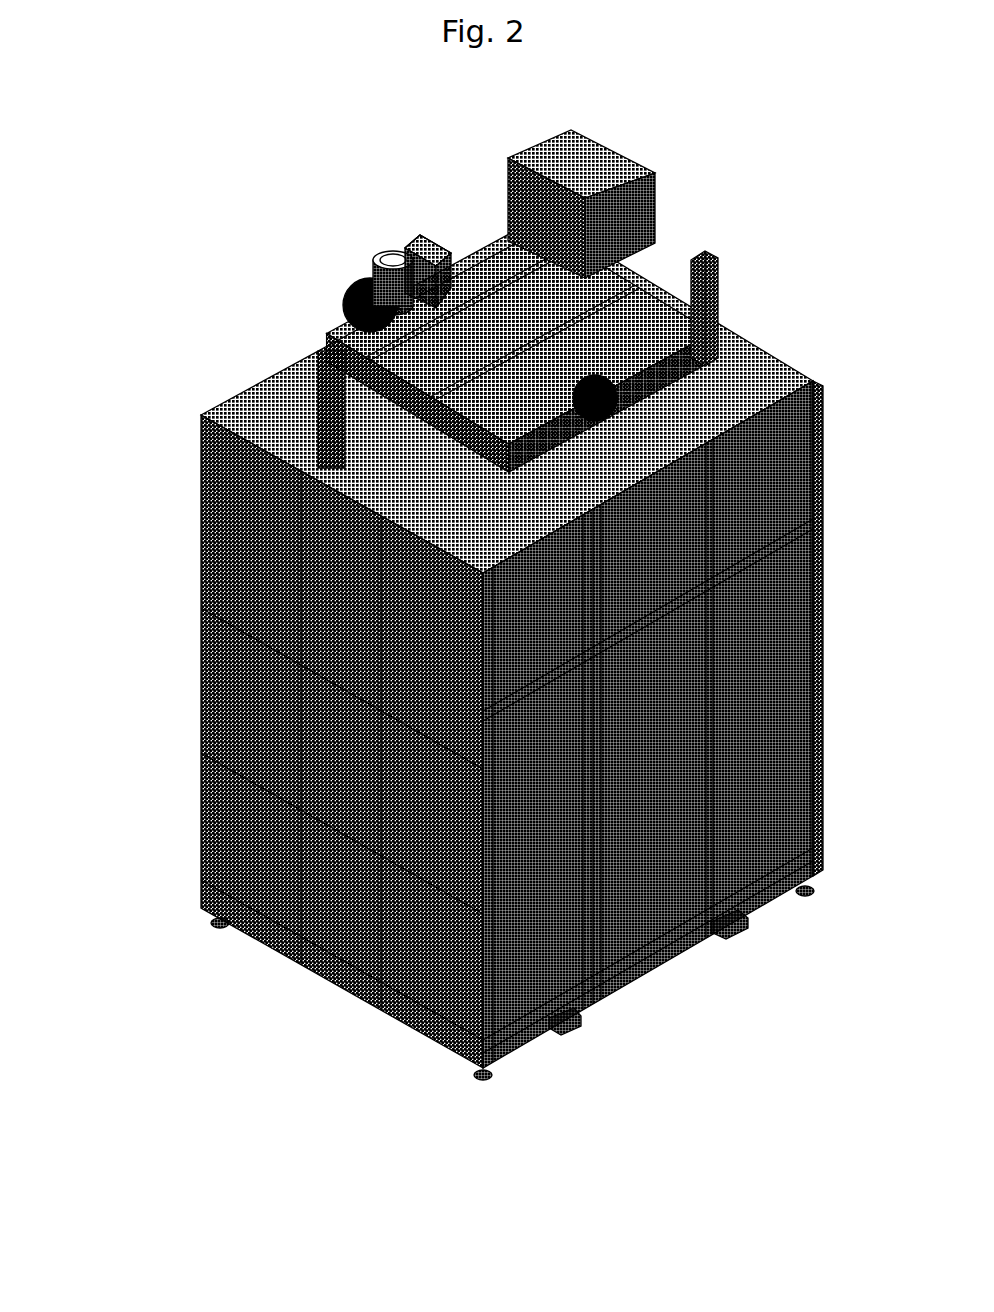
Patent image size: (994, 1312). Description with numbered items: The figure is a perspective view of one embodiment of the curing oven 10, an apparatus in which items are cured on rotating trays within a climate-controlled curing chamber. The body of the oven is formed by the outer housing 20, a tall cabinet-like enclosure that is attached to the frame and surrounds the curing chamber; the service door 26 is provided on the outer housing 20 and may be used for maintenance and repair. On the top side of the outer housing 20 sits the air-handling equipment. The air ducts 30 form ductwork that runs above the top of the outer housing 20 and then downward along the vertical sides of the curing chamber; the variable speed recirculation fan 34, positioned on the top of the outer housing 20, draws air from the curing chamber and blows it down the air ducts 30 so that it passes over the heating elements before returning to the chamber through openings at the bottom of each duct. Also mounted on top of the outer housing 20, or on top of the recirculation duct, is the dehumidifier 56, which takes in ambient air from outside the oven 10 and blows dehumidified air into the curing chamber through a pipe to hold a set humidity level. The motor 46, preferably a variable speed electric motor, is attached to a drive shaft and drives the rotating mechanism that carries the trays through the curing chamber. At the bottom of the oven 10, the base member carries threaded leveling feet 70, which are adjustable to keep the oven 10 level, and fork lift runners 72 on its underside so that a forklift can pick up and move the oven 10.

The curing oven 10 is at (147, 605).
The outer housing 20 is at (805, 372).
The service door 26 is at (662, 735).
The air ducts 30 is at (476, 330).
The variable speed recirculation fan 34 is at (337, 292).
The motor 46 is at (710, 307).
The dehumidifier 56 is at (585, 148).
The threaded leveling feet 70 is at (215, 920).
The fork lift runners 72 is at (567, 1020).